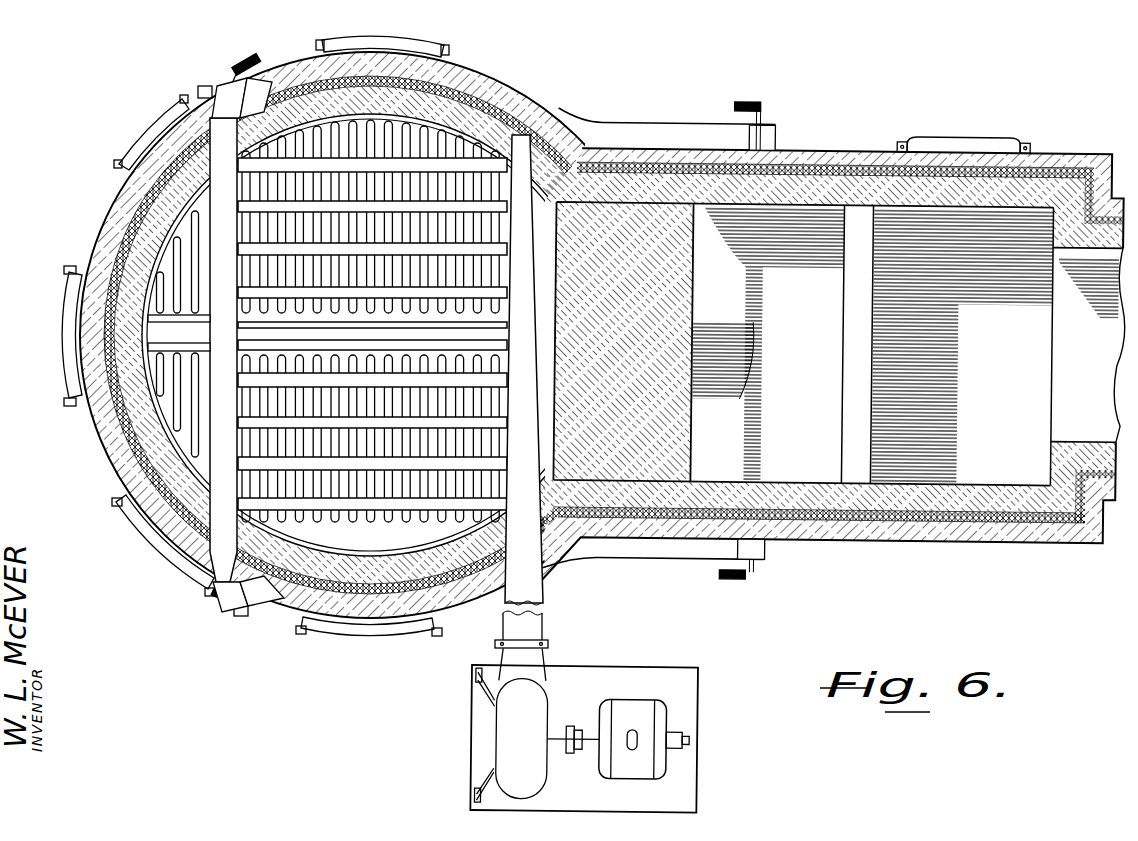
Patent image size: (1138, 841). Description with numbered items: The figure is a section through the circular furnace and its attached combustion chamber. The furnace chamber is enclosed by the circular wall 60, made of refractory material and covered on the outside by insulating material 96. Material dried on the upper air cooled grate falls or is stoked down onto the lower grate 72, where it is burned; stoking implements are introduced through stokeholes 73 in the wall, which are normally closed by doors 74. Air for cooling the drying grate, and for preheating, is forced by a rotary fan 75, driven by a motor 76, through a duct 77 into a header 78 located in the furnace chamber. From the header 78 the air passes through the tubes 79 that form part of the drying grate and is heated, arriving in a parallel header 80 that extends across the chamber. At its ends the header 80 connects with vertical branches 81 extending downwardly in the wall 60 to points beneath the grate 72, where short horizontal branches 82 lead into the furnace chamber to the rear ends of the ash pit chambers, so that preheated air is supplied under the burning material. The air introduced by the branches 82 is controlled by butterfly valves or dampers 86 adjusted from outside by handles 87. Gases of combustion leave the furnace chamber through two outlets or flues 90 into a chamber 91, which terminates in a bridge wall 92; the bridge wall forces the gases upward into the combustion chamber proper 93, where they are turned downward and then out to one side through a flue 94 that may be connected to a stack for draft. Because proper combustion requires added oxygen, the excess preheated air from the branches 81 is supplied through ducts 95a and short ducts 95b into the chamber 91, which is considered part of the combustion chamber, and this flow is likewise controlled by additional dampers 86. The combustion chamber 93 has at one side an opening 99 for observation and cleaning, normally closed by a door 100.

The circular wall 60 is at (160, 456).
The lower grate 72 is at (185, 410).
The stokeholes 73 is at (85, 355).
The doors 74 is at (360, 40).
The rotary fan 75 is at (584, 730).
The motor 76 is at (638, 702).
The duct 77 is at (548, 626).
The header 78 is at (524, 370).
The tubes 79 is at (482, 478).
The header 80 is at (223, 350).
The vertical branches 81 is at (246, 80).
The short horizontal branches 82 is at (268, 96).
The dampers 86 is at (775, 137).
The handles 87 is at (752, 103).
The outlets or flues 90 is at (690, 305).
The chamber 91 is at (772, 344).
The bridge wall 92 is at (848, 428).
The combustion chamber proper 93 is at (962, 346).
The flue 94 is at (1088, 332).
The ducts 95a is at (660, 122).
The short ducts 95b is at (798, 152).
The insulating material 96 is at (135, 245).
The opening 99 is at (1045, 152).
The door 100 is at (968, 137).